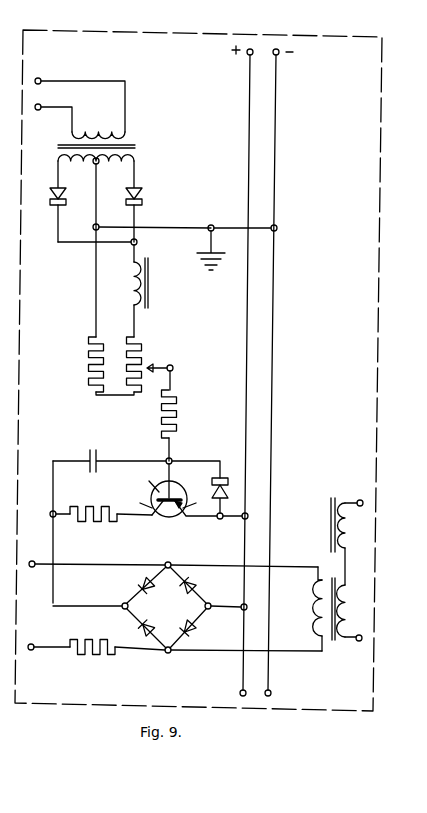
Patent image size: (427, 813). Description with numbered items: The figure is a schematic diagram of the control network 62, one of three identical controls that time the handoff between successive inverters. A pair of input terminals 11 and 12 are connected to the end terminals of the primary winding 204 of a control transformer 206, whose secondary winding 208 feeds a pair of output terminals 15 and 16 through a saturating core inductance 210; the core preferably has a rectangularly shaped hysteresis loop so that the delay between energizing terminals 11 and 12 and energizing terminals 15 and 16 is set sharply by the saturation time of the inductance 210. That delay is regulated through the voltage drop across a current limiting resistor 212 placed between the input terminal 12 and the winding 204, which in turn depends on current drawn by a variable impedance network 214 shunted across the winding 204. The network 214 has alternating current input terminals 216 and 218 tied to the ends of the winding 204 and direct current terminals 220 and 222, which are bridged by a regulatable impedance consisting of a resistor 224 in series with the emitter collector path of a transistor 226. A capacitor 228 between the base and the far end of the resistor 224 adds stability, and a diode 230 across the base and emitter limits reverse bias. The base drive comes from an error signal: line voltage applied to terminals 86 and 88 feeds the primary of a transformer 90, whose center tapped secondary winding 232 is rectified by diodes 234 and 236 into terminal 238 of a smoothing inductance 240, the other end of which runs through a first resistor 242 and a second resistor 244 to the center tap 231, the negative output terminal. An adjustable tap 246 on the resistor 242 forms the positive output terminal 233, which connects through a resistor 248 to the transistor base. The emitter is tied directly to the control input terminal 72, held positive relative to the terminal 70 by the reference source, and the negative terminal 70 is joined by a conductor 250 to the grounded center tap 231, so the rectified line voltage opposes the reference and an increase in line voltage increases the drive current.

The control network 62 is at (76, 29).
The terminal 88 is at (40, 79).
The terminal 86 is at (40, 105).
The transformer 90 is at (109, 157).
The center tapped secondary winding 232 is at (62, 160).
The diode 234 is at (53, 190).
The diode 236 is at (138, 190).
The center tap 231 is at (93, 228).
The conductor 250 is at (157, 228).
The terminal of smoothing inductance 238 is at (137, 242).
The smoothing inductance 240 is at (150, 292).
The second resistor 244 is at (88, 352).
The first resistor 242 is at (141, 346).
The positive output terminal 233 is at (172, 366).
The tap 246 is at (145, 392).
The resistor 248 is at (177, 427).
The capacitor 228 is at (95, 449).
The diode 230 is at (222, 477).
The resistor 224 is at (106, 506).
The transistor 226 is at (178, 514).
The input terminal 11 is at (30, 561).
The input terminal 12 is at (33, 650).
The alternating current input terminal 218 is at (171, 564).
The alternating current input terminal 216 is at (168, 653).
The direct current terminal 220 is at (123, 603).
The direct current terminal 222 is at (208, 602).
The variable impedance network 214 is at (177, 612).
The current limiting resistor 212 is at (98, 638).
The control input terminal 72 is at (246, 56).
The control input terminal 70 is at (279, 55).
The control transformer 206 is at (324, 573).
The saturating core inductance 210 is at (330, 515).
The primary winding 204 is at (318, 604).
The secondary winding 208 is at (345, 642).
The output terminal 16 is at (359, 499).
The output terminal 15 is at (358, 641).